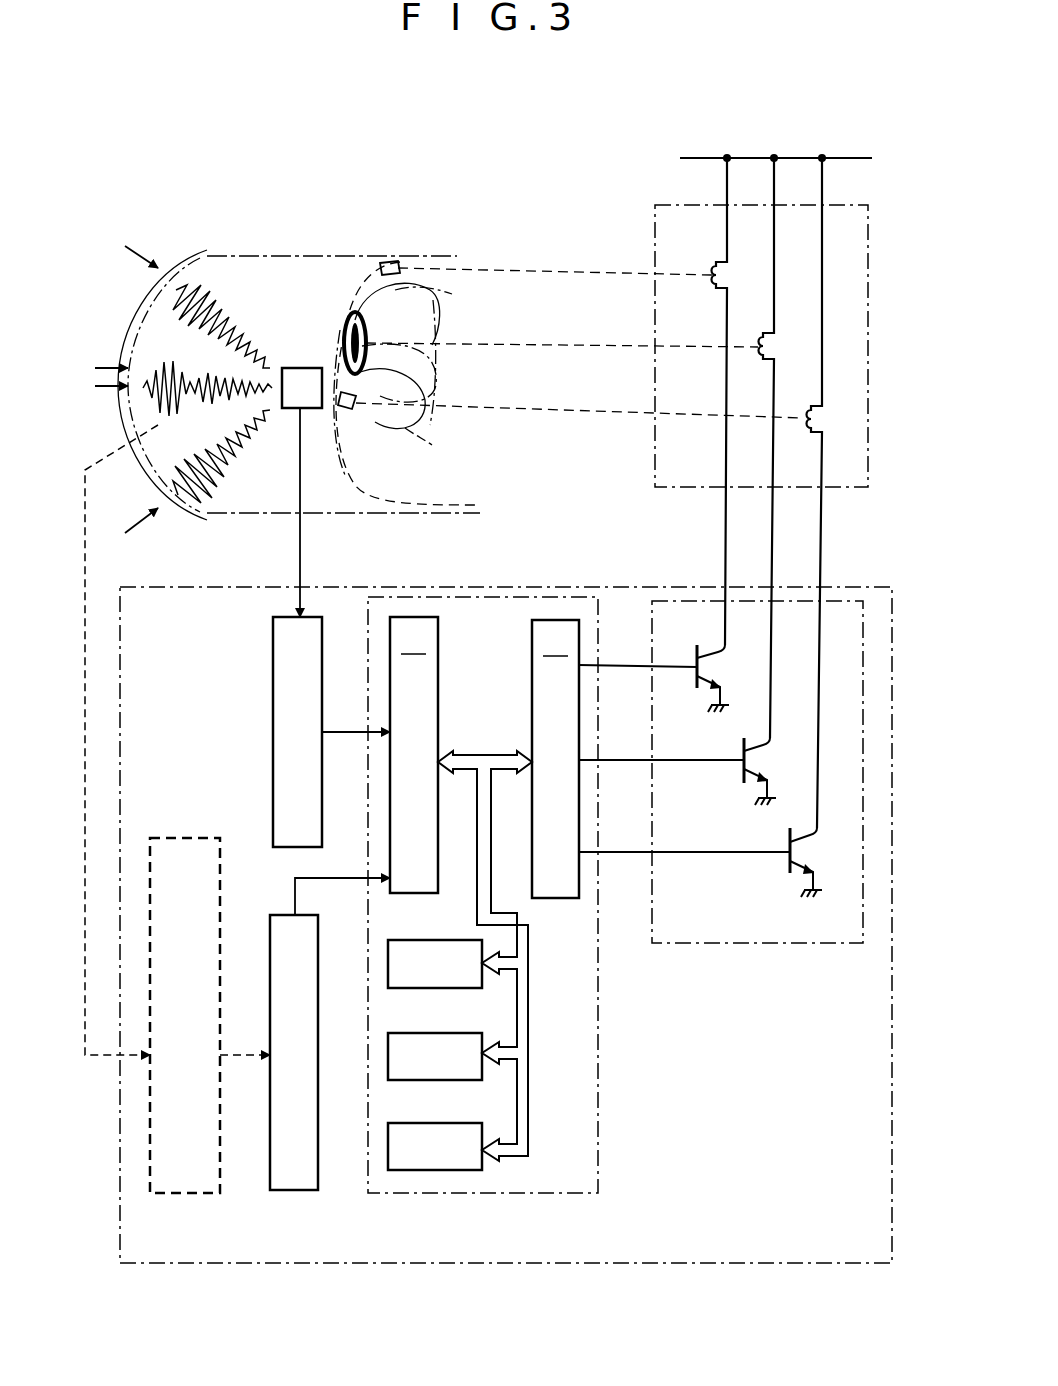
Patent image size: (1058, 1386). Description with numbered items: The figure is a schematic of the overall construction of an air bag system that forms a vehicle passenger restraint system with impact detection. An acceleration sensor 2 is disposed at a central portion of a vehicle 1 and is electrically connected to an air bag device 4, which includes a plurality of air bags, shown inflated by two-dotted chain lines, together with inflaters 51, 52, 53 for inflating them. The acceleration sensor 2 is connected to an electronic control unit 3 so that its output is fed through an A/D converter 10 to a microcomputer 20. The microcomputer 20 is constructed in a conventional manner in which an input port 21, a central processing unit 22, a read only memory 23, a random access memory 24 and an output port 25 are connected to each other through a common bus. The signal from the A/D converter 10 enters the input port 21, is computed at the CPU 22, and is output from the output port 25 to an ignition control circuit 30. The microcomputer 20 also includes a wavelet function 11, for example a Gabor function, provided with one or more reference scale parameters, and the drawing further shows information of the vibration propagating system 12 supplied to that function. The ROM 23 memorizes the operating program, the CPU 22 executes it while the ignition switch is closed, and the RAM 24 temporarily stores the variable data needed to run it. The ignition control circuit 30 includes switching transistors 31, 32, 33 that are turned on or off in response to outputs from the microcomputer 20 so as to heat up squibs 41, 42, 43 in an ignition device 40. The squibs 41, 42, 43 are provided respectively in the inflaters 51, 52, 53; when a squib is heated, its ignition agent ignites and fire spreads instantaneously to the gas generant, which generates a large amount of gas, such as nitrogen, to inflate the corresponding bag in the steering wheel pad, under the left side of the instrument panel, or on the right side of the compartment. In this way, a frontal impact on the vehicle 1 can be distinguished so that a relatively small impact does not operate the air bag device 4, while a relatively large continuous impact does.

The vehicle 1 is at (316, 516).
The acceleration sensor 2 is at (298, 366).
The electronic control unit 3 is at (508, 1263).
The air bag device 4 is at (353, 282).
The A/D converter 10 is at (273, 665).
The wavelet function 11 is at (299, 1192).
The information of vibration propagating system 12 is at (178, 1197).
The microcomputer 20 is at (600, 1093).
The input port 21 is at (414, 755).
The central processing unit 22 is at (441, 940).
The read only memory 23 is at (441, 1033).
The random access memory 24 is at (441, 1123).
The output port 25 is at (555, 759).
The ignition control circuit 30 is at (712, 955).
The switching transistor 31 is at (677, 771).
The switching transistor 32 is at (700, 862).
The switching transistor 33 is at (654, 678).
The ignition device 40 is at (655, 462).
The squib 41 is at (570, 448).
The squib 42 is at (589, 493).
The squib 43 is at (562, 401).
The inflater 51 is at (352, 338).
The inflater 52 is at (351, 408).
The inflater 53 is at (388, 262).